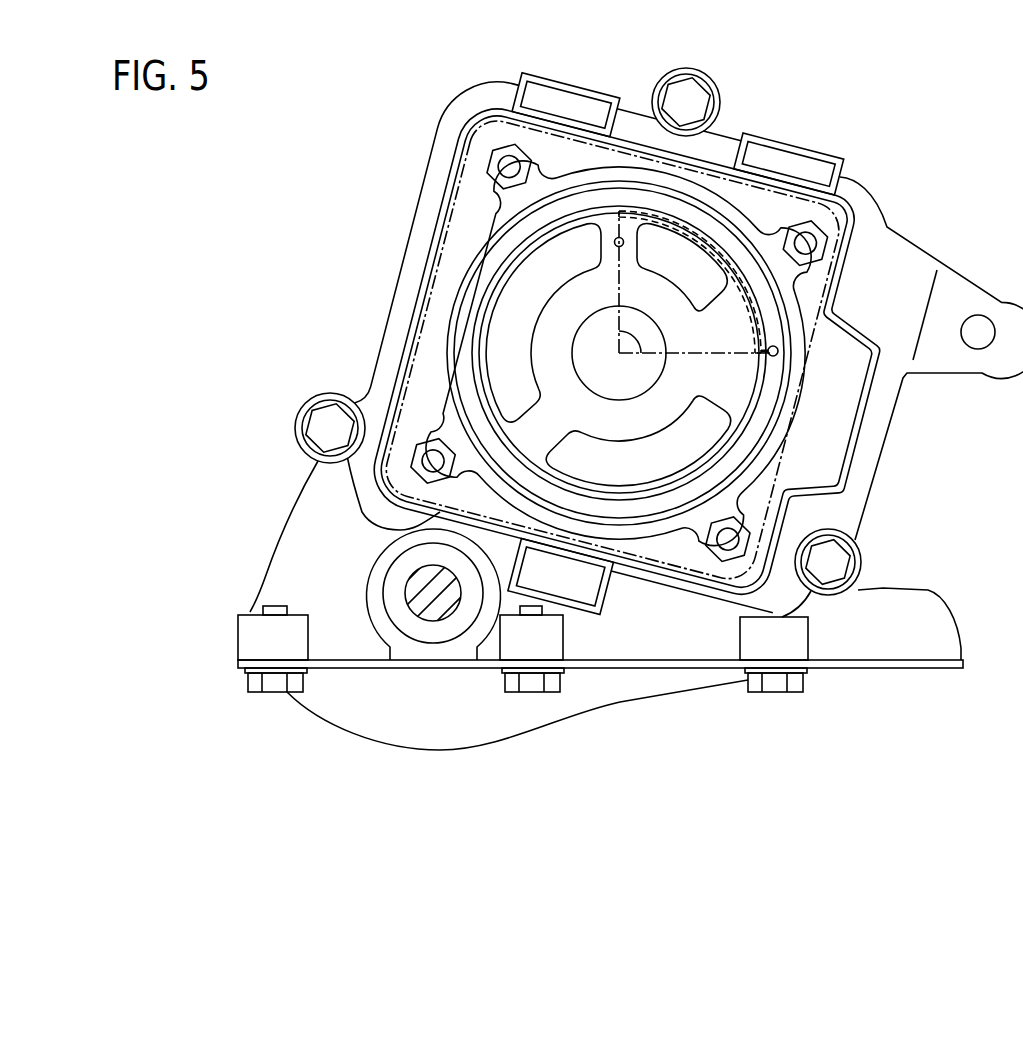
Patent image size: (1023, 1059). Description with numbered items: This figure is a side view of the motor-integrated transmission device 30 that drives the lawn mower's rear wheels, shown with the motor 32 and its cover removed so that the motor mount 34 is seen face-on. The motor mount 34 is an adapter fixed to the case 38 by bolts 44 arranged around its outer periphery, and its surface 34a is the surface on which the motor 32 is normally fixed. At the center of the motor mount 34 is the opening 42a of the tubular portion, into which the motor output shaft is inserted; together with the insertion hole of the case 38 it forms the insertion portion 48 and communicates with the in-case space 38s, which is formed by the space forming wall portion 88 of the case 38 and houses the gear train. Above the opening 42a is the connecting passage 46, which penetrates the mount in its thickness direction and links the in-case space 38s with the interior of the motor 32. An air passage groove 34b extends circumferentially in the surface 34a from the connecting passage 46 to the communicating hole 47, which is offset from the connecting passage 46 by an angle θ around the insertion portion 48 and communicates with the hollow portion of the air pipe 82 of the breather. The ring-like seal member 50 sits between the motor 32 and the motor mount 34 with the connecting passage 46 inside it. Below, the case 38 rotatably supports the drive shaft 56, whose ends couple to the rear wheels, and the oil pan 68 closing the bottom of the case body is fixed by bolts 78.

The transmission device 30 is at (334, 152).
The motor 32 is at (424, 292).
The motor mount 34 is at (413, 204).
The surface of the motor mount 34a is at (462, 252).
The air passage groove 34b is at (690, 233).
The case 38 is at (303, 492).
The in-case space 38s is at (298, 582).
The opening 42a is at (574, 342).
The bolts 44 is at (693, 101).
The connecting passage 46 is at (614, 243).
The communicating hole 47 is at (779, 355).
The insertion portion 48 is at (574, 353).
The seal member 50 is at (772, 412).
The drive shaft 56 is at (415, 592).
The oil pan 68 is at (560, 714).
The bolts 78 is at (782, 693).
The air pipe 82 is at (818, 380).
The space forming wall portion 88 is at (300, 526).